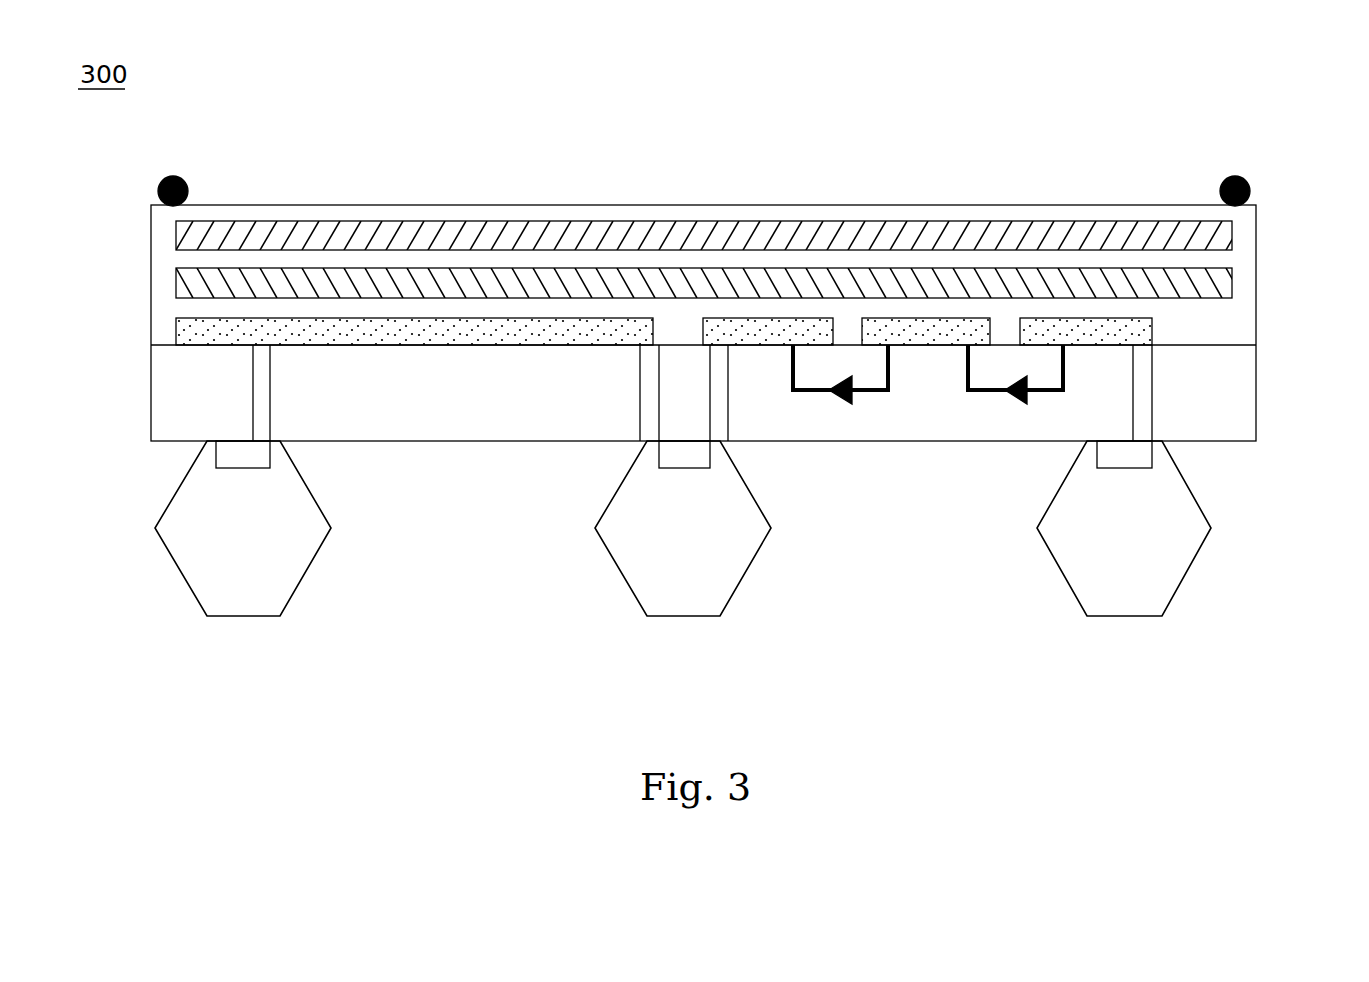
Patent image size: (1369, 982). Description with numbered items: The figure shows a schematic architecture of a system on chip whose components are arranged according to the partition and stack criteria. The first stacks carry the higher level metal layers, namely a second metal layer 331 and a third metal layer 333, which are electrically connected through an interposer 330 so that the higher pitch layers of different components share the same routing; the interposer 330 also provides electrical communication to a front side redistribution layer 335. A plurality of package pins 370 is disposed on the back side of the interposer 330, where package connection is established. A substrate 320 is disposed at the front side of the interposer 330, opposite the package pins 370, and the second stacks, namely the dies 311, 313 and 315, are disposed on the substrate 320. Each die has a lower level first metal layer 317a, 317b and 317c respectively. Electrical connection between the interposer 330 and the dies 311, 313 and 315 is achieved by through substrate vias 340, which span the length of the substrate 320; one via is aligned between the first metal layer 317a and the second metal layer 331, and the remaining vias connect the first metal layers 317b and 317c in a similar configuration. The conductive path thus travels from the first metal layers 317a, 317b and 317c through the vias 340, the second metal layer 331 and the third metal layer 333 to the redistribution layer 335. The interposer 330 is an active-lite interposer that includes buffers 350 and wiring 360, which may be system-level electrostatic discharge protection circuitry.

The die 311 is at (292, 558).
The die 313 is at (732, 558).
The die 315 is at (1172, 558).
The first metal layer 317a is at (263, 455).
The first metal layer 317b is at (705, 455).
The first metal layer 317c is at (1143, 455).
The substrate 320 is at (1245, 421).
The interposer 330 is at (1237, 312).
The second metal layer 331 is at (172, 333).
The third metal layer 333 is at (1225, 283).
The redistribution layer 335 is at (1225, 235).
The through substrate vias 340 is at (258, 400).
The buffers 350 is at (1005, 395).
The wiring 360 is at (795, 392).
The package pins 370 is at (1250, 191).